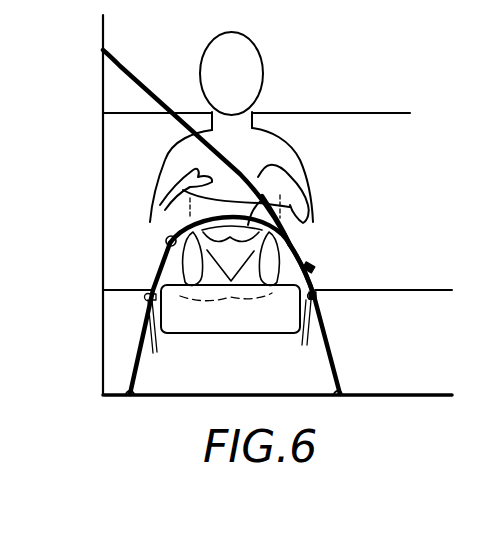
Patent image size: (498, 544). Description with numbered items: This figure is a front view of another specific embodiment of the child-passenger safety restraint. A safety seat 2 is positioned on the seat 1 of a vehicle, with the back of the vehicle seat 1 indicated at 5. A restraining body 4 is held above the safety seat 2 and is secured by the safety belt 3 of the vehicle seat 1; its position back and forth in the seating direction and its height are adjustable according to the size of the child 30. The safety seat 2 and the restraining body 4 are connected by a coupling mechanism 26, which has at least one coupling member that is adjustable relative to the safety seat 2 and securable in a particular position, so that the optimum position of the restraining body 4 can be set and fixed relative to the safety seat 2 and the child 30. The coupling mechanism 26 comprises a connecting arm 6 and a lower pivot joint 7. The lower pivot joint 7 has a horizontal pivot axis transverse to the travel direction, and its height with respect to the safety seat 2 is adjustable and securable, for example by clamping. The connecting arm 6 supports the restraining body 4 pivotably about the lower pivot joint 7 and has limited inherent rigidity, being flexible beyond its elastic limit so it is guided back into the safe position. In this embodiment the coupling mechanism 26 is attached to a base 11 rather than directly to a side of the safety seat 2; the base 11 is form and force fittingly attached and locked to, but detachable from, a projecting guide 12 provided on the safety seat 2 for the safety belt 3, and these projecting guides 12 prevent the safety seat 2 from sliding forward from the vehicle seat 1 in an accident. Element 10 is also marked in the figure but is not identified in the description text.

The vehicle seat 1 is at (114, 360).
The safety seat 2 is at (206, 333).
The safety belt 3 is at (140, 88).
The restraining body 4 is at (231, 207).
The back of the vehicle seat 5 is at (116, 190).
The connecting arm 6 is at (303, 265).
The lower pivot joint 7 is at (330, 288).
The strap segment 10 is at (296, 240).
The base 11 is at (318, 298).
The projecting guide 12 is at (304, 345).
The coupling mechanism 26 is at (317, 267).
The child 30 is at (284, 155).